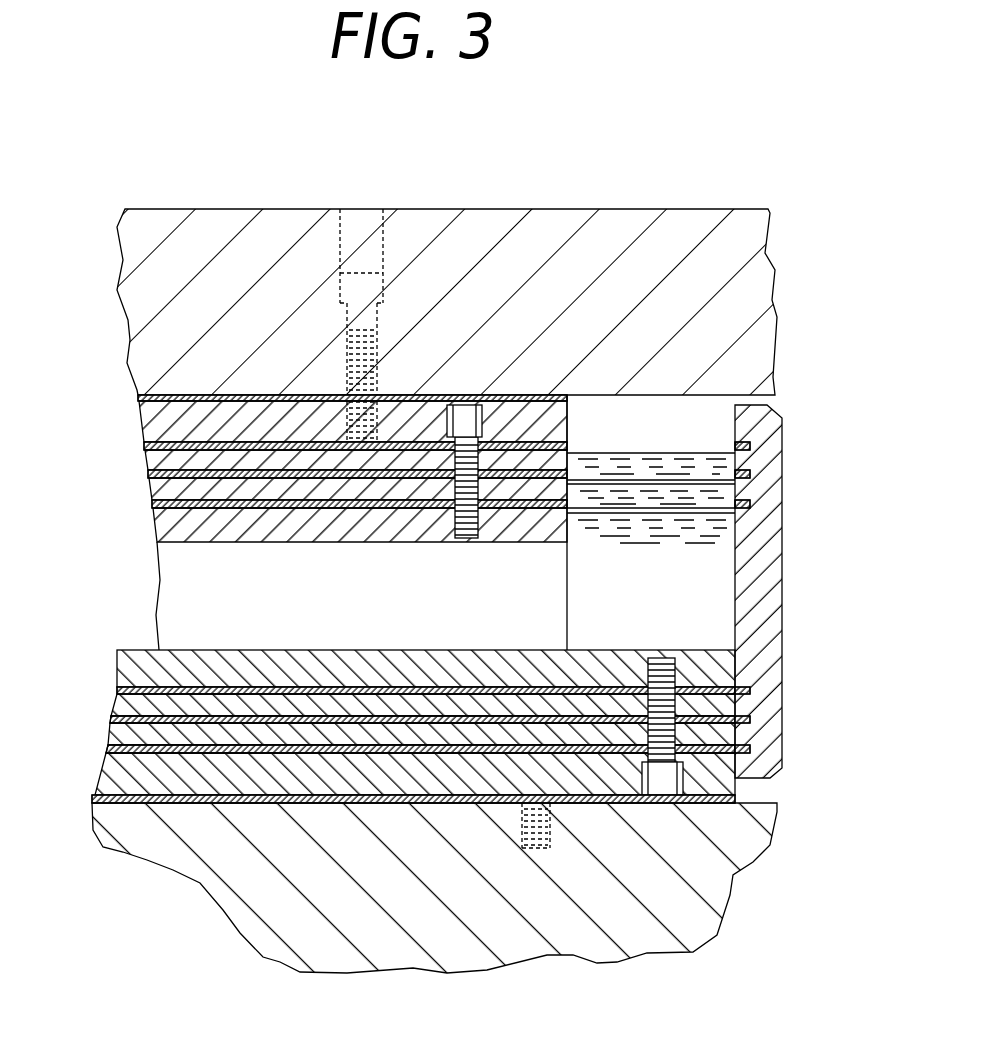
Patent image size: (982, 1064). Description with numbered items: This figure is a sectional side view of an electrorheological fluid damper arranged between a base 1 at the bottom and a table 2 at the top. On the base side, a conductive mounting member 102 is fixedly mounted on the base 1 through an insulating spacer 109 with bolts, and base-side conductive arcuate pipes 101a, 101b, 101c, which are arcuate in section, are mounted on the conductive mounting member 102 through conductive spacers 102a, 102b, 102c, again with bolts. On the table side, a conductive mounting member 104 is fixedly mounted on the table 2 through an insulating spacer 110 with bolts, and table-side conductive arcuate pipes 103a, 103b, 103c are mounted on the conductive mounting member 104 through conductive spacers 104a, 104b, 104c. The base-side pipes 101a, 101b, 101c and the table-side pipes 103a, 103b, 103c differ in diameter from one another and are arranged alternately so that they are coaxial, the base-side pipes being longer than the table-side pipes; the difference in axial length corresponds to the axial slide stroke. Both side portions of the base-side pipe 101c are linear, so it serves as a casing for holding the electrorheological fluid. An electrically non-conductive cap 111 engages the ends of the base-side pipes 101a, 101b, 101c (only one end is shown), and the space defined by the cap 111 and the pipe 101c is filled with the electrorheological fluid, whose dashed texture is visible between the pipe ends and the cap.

The base 1 is at (435, 913).
The table 2 is at (585, 255).
The base-side conductive arcuate pipe 101a is at (180, 694).
The base-side conductive arcuate pipe 101b is at (233, 722).
The base-side conductive arcuate pipe 101c is at (282, 750).
The conductive mounting member 102 is at (622, 786).
The conductive spacer 102a is at (302, 665).
The conductive spacer 102b is at (398, 707).
The conductive spacer 102c is at (478, 735).
The table-side conductive arcuate pipe 103a is at (150, 505).
The table-side conductive arcuate pipe 103b is at (150, 475).
The table-side conductive arcuate pipe 103c is at (148, 446).
The conductive mounting member 104 is at (152, 417).
The conductive spacer 104a is at (222, 530).
The conductive spacer 104b is at (192, 490).
The conductive spacer 104c is at (175, 460).
The insulating spacer 109 is at (343, 802).
The insulating spacer 110 is at (245, 395).
The electrically non-conductive cap 111 is at (760, 633).